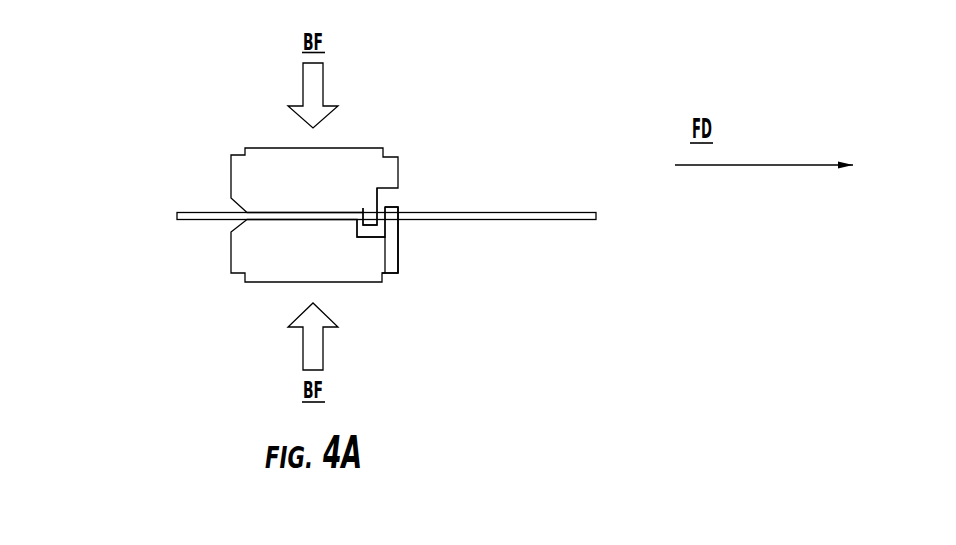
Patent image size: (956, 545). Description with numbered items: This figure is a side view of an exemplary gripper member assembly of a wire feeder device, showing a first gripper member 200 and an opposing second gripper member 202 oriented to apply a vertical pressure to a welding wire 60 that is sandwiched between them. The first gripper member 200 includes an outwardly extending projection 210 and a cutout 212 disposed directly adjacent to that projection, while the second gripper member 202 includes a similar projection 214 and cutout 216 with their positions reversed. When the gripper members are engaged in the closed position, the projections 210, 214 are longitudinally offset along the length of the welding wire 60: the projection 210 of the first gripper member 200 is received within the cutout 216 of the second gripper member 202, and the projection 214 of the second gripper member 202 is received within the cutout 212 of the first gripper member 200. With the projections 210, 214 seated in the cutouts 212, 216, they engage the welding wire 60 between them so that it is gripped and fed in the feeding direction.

The welding wire 60 is at (168, 213).
The first gripper member 200 is at (268, 243).
The second gripper member 202 is at (263, 160).
The projection 210 is at (402, 228).
The cutout 212 is at (373, 238).
The projection 214 is at (377, 203).
The cutout 216 is at (402, 196).